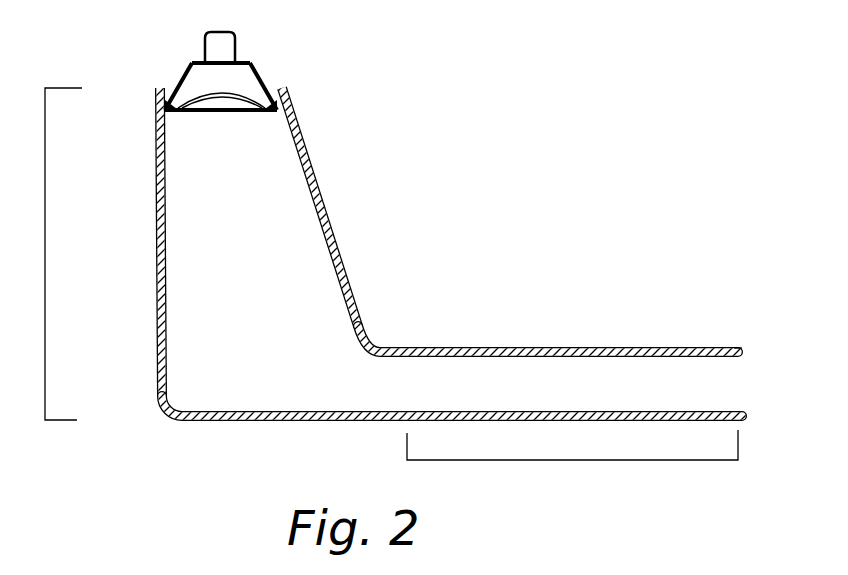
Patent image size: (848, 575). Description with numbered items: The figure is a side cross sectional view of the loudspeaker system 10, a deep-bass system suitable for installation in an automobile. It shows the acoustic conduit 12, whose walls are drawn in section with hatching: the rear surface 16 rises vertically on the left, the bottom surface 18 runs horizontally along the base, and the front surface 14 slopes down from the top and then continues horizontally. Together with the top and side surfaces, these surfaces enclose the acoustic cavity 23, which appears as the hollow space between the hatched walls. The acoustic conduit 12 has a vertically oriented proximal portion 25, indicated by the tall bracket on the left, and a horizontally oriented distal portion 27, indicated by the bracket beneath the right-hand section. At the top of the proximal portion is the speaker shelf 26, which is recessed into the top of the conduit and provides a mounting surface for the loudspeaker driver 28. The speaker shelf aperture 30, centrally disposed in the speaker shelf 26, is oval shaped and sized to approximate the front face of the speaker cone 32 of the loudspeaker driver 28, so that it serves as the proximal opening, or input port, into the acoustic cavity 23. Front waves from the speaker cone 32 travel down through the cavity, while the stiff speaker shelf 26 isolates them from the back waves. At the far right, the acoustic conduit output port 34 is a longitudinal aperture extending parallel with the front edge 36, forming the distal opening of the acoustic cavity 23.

The loudspeaker system 10 is at (444, 240).
The acoustic conduit 12 is at (444, 273).
The front surface 14 is at (422, 348).
The rear surface 16 is at (158, 246).
The bottom surface 18 is at (340, 423).
The acoustic cavity 23 is at (290, 212).
The proximal portion 25 is at (48, 254).
The speaker shelf 26 is at (285, 118).
The distal portion 27 is at (572, 460).
The loudspeaker driver 28 is at (238, 60).
The speaker shelf aperture 30 is at (220, 112).
The speaker cone 32 is at (247, 92).
The acoustic conduit output port 34 is at (733, 383).
The front edge 36 is at (740, 348).